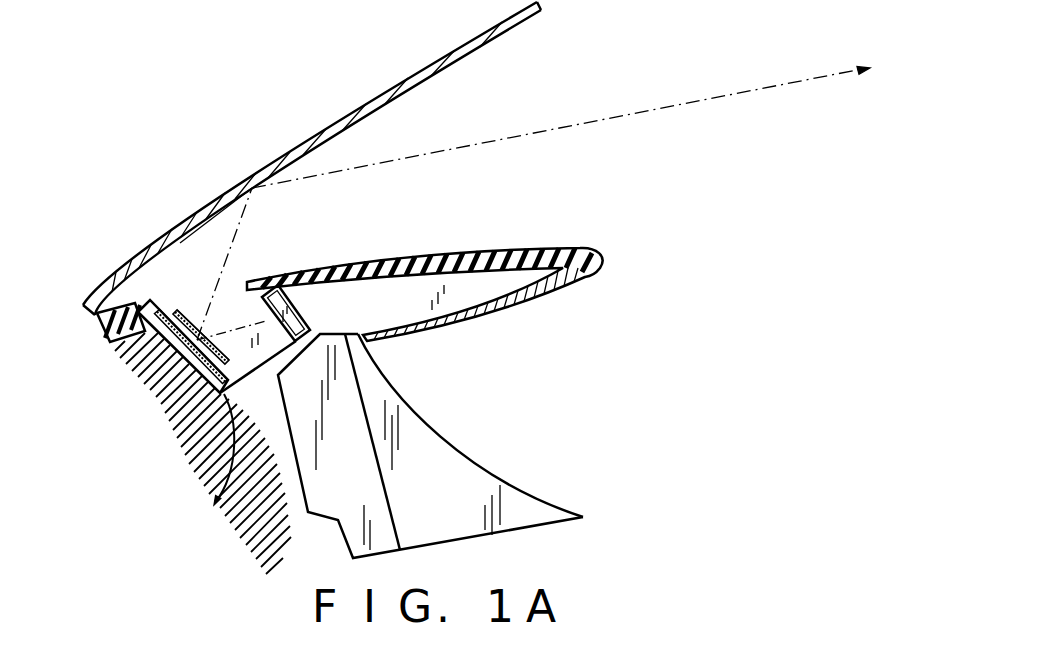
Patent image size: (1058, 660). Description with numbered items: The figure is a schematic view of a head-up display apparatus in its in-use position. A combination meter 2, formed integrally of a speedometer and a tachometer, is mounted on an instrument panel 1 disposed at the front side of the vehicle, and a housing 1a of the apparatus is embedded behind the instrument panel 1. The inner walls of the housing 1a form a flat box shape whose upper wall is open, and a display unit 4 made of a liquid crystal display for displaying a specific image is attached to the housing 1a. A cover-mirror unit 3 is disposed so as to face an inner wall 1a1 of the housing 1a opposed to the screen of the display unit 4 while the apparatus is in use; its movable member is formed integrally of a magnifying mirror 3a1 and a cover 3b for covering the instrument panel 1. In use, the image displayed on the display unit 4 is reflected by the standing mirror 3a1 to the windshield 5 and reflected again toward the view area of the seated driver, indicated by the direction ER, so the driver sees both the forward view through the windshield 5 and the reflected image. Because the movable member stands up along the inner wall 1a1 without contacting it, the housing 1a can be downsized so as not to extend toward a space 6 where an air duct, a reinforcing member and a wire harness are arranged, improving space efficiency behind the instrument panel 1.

The instrument panel 1 is at (605, 265).
The housing 1a is at (249, 437).
The inner wall 1a1 is at (141, 347).
The combination meter 2 is at (400, 414).
The cover-mirror unit 3 is at (164, 300).
The magnifying mirror 3a1 is at (178, 310).
The cover 3b is at (143, 310).
The display unit 4 is at (268, 280).
The windshield 5 is at (347, 107).
The space 6 is at (162, 400).
The viewing direction ER is at (585, 119).